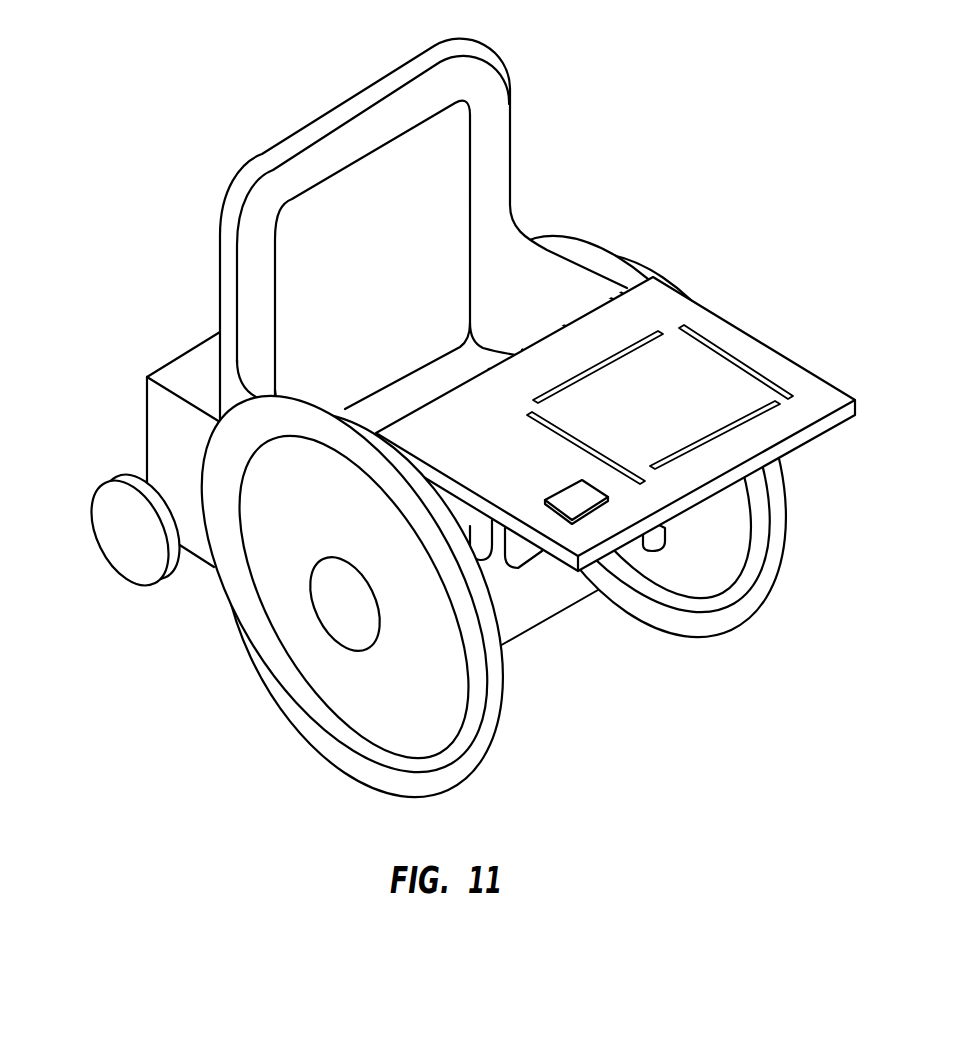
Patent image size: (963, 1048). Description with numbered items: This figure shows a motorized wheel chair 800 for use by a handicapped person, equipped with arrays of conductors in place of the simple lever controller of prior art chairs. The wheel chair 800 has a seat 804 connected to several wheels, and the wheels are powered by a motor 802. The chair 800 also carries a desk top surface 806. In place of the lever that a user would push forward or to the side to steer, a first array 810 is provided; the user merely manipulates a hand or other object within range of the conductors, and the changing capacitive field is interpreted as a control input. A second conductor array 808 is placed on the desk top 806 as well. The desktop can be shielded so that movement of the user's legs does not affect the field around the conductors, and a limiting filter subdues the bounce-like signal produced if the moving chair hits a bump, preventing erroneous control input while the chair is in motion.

The motorized wheel chair 800 is at (145, 118).
The motor 802 is at (145, 398).
The seat 804 is at (498, 128).
The desk top surface 806 is at (616, 431).
The second conductor array 808 is at (767, 369).
The first array 810 is at (567, 483).